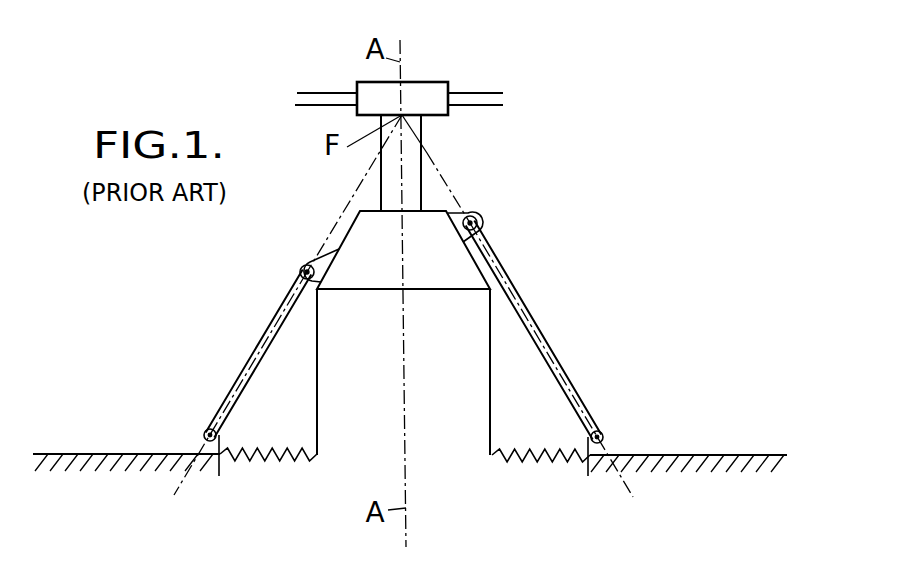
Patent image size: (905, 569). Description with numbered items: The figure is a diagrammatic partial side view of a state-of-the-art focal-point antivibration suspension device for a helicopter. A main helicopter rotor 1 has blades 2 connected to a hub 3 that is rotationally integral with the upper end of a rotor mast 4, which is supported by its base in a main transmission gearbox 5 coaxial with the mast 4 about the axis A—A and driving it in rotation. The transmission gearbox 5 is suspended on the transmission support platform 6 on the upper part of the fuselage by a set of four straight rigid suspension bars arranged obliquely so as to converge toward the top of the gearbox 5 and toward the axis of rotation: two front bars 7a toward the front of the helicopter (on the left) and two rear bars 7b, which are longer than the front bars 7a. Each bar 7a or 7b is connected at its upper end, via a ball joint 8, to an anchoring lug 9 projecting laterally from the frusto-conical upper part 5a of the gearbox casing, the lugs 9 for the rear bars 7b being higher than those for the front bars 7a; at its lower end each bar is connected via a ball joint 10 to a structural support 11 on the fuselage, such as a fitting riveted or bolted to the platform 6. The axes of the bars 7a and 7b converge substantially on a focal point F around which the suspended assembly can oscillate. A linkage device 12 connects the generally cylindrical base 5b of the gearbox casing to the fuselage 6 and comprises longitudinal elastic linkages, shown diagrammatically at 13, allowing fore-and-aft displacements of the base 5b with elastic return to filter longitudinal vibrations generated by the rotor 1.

The main helicopter rotor 1 is at (465, 82).
The blades 2 is at (480, 102).
The hub 3 is at (423, 92).
The rotor mast 4 is at (417, 163).
The main transmission gearbox 5 is at (416, 316).
The frusto-conical upper part 5a is at (360, 237).
The generally cylindrical base 5b is at (498, 420).
The transmission support platform 6 is at (733, 462).
The front bars 7a is at (263, 330).
The rear bars 7b is at (535, 325).
The ball joint 8 is at (300, 272).
The anchoring lug 9 is at (313, 258).
The ball joint 10 is at (205, 428).
The structural support 11 is at (193, 445).
The linkage device 12 is at (252, 442).
The longitudinal elastic linkages 13 is at (278, 461).